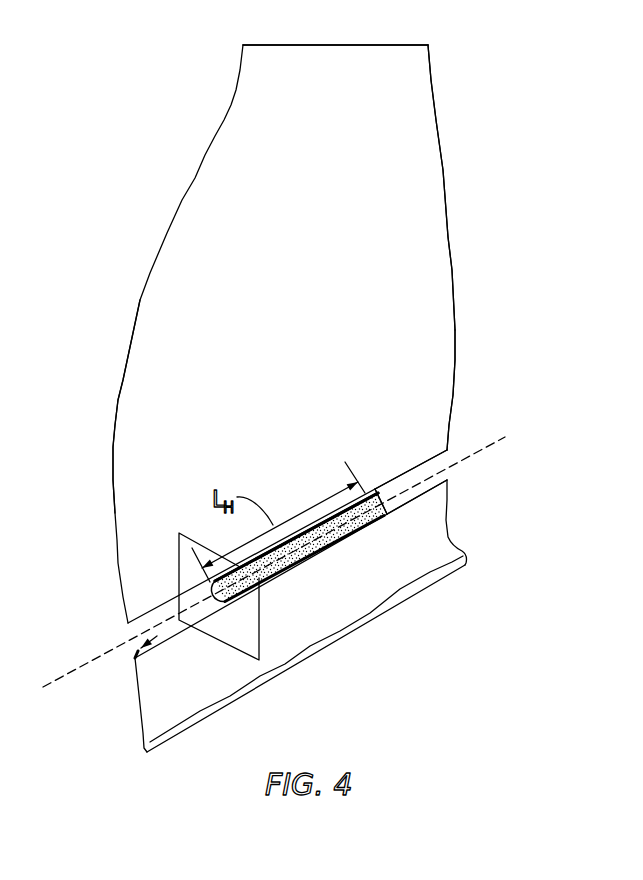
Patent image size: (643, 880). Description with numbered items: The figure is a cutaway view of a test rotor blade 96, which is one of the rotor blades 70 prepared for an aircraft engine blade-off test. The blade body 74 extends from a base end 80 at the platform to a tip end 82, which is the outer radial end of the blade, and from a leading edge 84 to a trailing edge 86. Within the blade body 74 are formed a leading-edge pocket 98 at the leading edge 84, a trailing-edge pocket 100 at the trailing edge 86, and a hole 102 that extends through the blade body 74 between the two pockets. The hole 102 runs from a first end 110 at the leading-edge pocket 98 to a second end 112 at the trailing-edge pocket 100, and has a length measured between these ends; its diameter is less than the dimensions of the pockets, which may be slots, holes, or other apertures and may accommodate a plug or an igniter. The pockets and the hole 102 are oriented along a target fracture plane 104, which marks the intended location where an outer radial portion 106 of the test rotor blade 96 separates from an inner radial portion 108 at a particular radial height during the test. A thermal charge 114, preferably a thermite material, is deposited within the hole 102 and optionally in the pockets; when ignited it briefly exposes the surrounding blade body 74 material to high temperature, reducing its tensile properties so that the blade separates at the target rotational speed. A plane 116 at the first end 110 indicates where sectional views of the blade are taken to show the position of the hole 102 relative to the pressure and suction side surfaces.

The rotor blade 70 is at (562, 123).
The blade body 74 is at (458, 327).
The base end 80 is at (407, 598).
The tip end 82 is at (366, 45).
The leading edge 84 is at (248, 403).
The trailing edge 86 is at (452, 270).
The test rotor blade 96 is at (515, 227).
The leading-edge pocket 98 is at (135, 662).
The trailing-edge pocket 100 is at (423, 496).
The hole 102 is at (353, 534).
The target fracture plane 104 is at (535, 456).
The outer radial portion 106 is at (435, 385).
The inner radial portion 108 is at (342, 588).
The first end 110 is at (207, 611).
The second end 112 is at (371, 478).
The thermal charge 114 is at (322, 527).
The plane 116 is at (262, 633).